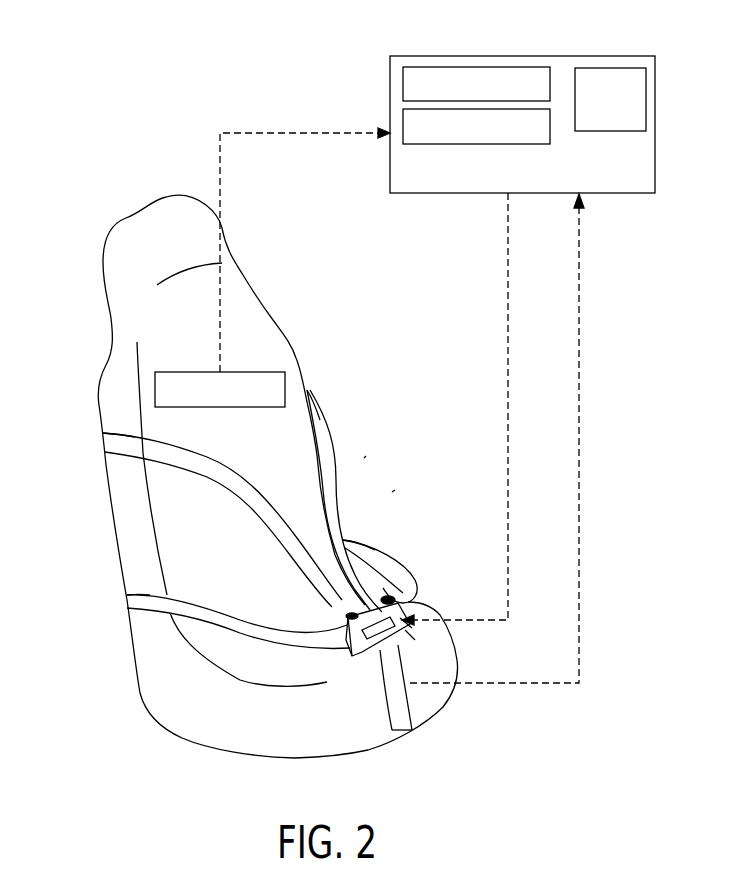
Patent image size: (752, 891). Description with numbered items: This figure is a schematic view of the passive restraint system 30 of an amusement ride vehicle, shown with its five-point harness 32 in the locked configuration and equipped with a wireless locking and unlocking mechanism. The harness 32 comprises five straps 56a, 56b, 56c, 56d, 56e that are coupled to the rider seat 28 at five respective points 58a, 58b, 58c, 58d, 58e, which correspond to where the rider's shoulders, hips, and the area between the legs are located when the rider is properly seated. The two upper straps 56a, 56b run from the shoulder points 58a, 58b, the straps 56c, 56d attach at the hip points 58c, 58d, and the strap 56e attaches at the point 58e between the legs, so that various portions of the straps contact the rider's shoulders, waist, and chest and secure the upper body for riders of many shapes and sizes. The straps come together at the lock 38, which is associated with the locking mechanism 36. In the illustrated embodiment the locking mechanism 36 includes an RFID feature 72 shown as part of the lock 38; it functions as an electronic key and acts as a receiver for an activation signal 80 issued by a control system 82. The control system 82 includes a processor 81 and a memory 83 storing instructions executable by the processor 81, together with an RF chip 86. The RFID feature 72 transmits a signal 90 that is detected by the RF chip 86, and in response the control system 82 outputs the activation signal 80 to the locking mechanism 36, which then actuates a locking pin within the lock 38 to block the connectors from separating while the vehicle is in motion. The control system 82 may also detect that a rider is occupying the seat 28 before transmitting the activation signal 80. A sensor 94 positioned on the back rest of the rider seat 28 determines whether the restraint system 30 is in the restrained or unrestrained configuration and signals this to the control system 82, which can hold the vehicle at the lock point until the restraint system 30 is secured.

The rider seat 28 is at (150, 203).
The restraint system 30 is at (395, 489).
The 5-point harness 32 is at (366, 456).
The locking mechanism 36 is at (412, 627).
The lock 38 is at (425, 645).
The strap 56a is at (175, 455).
The strap 56b is at (325, 418).
The strap 56c is at (213, 620).
The strap 56d is at (428, 597).
The strap 56e is at (402, 693).
The point 58a is at (103, 440).
The point 58b is at (307, 390).
The point 58c is at (127, 605).
The point 58d is at (343, 540).
The point 58e is at (407, 730).
The RFID feature 72 is at (347, 660).
The activation signal 80 is at (508, 407).
The processor 81 is at (392, 84).
The control system 82 is at (522, 56).
The memory 83 is at (403, 125).
The RF chip 86 is at (575, 100).
The signal 90 is at (492, 683).
The sensor 94 is at (220, 408).